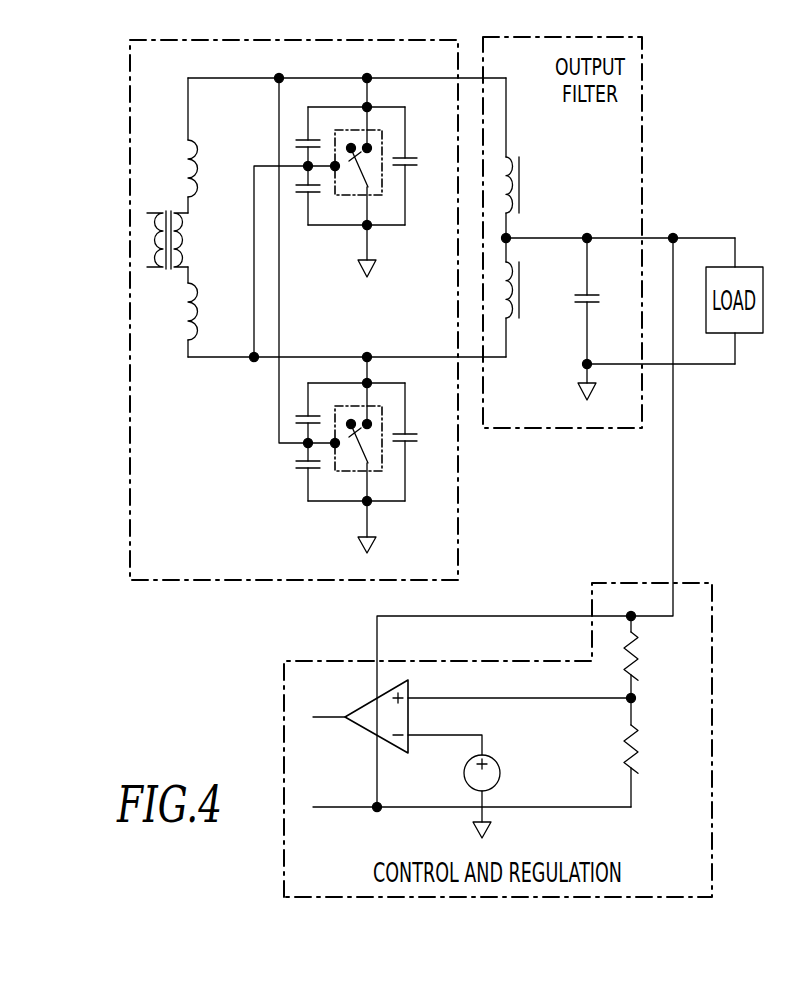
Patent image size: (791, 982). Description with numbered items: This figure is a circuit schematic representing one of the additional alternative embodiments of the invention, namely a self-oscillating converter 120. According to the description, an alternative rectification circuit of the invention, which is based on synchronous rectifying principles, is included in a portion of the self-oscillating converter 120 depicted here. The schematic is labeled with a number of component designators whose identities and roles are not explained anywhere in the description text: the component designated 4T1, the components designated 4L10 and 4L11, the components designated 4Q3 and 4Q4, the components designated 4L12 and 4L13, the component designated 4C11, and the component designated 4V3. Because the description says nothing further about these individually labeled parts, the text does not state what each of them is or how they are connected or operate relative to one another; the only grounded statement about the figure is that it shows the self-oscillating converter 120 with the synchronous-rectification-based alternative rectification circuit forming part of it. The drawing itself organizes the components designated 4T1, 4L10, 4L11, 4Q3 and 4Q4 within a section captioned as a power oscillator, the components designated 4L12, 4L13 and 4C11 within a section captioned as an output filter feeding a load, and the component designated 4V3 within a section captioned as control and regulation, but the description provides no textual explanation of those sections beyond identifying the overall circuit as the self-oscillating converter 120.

The self-oscillating converter 120 is at (237, 638).
The transformer 4T1 is at (167, 225).
The inductor 4L10 is at (211, 145).
The inductor 4L11 is at (211, 312).
The switching transistor 4Q3 is at (356, 177).
The switching transistor 4Q4 is at (356, 455).
The RF choke inductor 4L12 is at (531, 158).
The RF choke inductor 4L13 is at (531, 297).
The filter capacitor 4C11 is at (601, 319).
The reference voltage source 4V3 is at (503, 796).